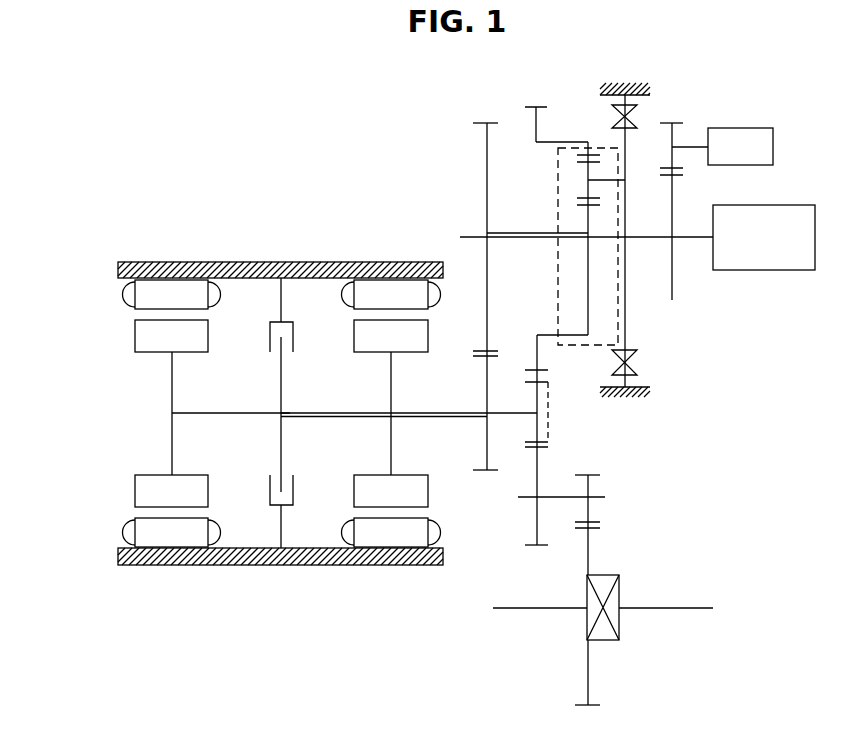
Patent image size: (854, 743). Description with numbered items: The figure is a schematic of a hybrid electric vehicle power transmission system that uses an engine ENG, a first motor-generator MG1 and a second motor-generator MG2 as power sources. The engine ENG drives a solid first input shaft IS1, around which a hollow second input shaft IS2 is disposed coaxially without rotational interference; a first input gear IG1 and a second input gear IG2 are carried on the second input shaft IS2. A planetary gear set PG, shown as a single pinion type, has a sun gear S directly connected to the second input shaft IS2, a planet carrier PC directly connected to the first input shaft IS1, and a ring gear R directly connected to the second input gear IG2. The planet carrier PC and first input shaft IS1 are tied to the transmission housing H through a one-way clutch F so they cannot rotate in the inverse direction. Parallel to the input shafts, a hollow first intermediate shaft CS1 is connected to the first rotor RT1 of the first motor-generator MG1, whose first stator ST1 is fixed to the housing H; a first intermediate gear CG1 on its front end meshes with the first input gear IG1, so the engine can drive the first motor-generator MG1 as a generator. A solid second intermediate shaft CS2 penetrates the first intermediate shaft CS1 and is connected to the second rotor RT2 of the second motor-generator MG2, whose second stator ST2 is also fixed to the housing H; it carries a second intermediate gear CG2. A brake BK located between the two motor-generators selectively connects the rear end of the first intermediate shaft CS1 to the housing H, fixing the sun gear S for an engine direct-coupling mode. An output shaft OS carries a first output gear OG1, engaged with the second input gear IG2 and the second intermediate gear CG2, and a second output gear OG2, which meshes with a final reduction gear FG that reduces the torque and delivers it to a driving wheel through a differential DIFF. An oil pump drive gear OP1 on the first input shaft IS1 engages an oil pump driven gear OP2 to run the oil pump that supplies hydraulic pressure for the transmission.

The transmission housing H is at (308, 262).
The second motor-generator MG2 is at (124, 413).
The first motor-generator MG1 is at (365, 413).
The second stator ST2 is at (172, 413).
The second rotor RT2 is at (122, 316).
The first stator ST1 is at (391, 413).
The first rotor RT1 is at (345, 332).
The brake BK is at (262, 342).
The second intermediate shaft CS2 is at (230, 418).
The first intermediate shaft CS1 is at (336, 419).
The second input shaft IS2 is at (524, 240).
The first input shaft IS1 is at (657, 240).
The first intermediate gear CG1 is at (486, 387).
The second intermediate gear CG2 is at (542, 436).
The first input gear IG1 is at (486, 141).
The second input gear IG2 is at (528, 122).
The planetary gear set PG is at (565, 284).
The ring gear R is at (577, 152).
The planet carrier PC is at (590, 183).
The sun gear S is at (577, 206).
The one-way clutch F is at (637, 137).
The oil pump drive gear OP1 is at (675, 193).
The oil pump driven gear OP2 is at (674, 135).
The engine ENG is at (764, 237).
The output shaft OS is at (522, 498).
The first output gear OG1 is at (542, 466).
The second output gear OG2 is at (592, 490).
The final reduction gear FG is at (592, 548).
The differential DIFF is at (621, 592).